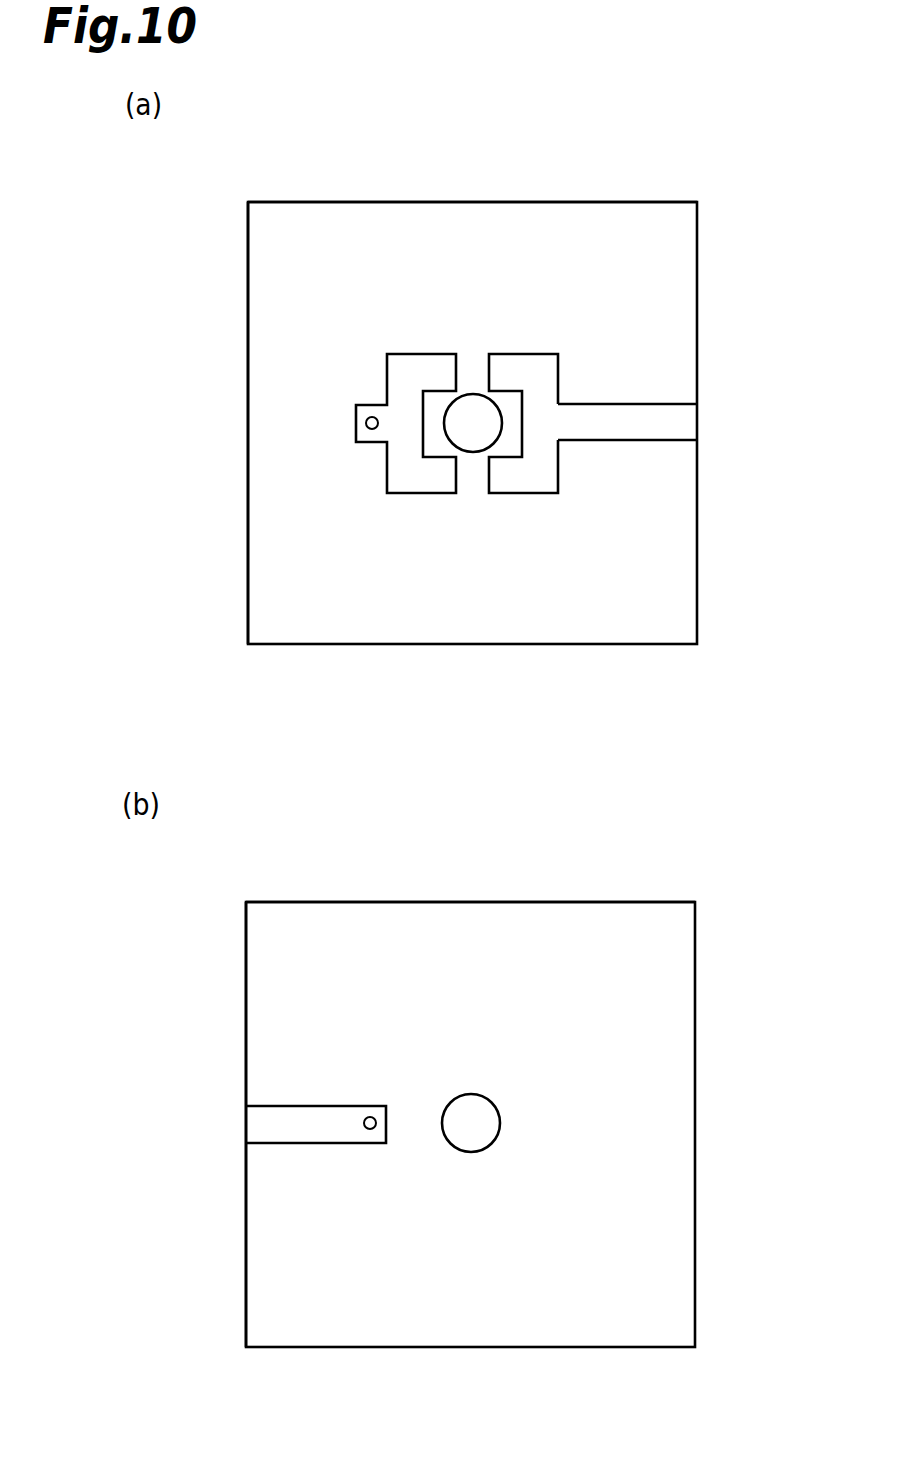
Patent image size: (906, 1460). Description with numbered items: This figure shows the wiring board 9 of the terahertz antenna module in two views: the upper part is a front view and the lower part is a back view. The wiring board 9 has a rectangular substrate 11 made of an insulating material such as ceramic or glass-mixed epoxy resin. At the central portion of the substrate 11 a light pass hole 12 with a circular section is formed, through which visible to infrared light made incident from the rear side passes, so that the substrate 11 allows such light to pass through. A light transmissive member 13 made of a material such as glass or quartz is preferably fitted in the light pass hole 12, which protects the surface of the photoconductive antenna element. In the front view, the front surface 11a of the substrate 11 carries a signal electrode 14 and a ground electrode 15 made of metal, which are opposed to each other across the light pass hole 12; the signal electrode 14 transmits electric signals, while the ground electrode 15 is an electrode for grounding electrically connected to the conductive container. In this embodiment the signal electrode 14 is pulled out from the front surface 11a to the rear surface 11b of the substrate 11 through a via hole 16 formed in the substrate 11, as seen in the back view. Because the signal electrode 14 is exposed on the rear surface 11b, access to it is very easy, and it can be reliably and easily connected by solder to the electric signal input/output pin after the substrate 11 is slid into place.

The wiring board 9 is at (640, 199).
The substrate 11 is at (699, 597).
The front surface 11a is at (267, 553).
The rear surface 11b is at (265, 1248).
The light pass hole 12 is at (448, 431).
The light transmissive member 13 is at (478, 770).
The signal electrode 14 is at (407, 478).
The ground electrode 15 is at (625, 430).
The via hole 16 is at (372, 417).